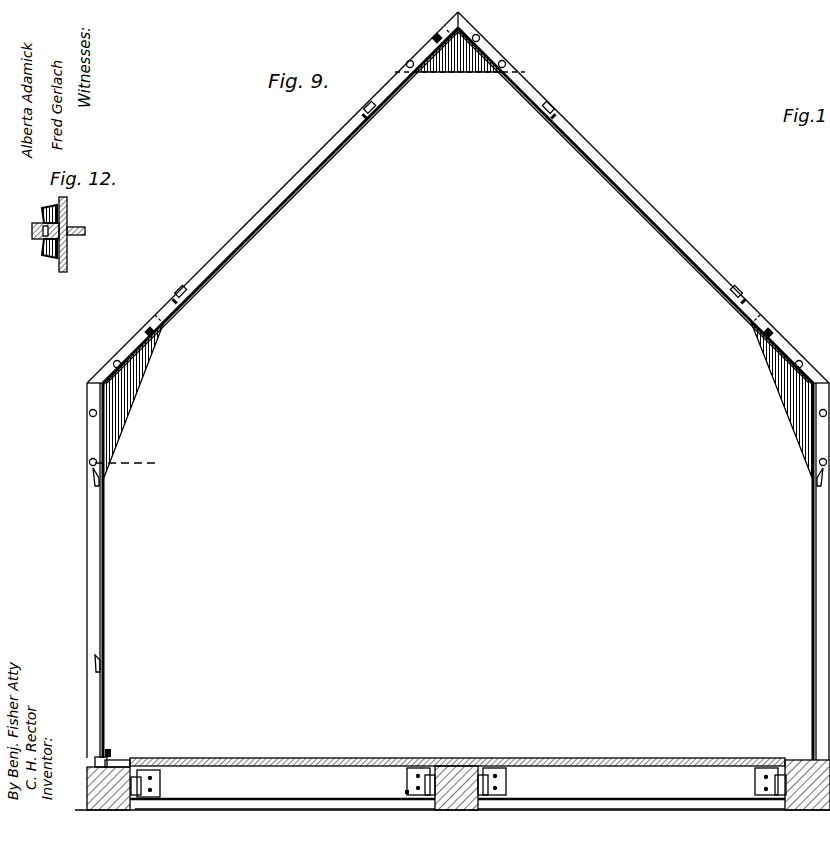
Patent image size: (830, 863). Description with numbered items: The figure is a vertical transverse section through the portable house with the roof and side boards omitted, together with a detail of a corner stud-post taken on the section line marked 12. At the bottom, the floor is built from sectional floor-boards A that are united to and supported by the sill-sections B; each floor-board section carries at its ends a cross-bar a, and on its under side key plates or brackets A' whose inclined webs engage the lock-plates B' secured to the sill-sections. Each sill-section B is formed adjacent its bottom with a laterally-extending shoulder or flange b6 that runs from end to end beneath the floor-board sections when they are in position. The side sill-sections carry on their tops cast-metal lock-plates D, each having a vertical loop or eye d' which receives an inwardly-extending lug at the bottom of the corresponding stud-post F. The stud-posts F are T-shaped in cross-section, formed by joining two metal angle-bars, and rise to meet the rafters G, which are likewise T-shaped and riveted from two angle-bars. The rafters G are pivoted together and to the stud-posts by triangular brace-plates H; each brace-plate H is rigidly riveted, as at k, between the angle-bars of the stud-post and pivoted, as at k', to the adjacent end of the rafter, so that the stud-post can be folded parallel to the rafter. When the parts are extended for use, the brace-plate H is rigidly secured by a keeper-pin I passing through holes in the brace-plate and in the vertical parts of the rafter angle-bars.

In FIG. 9, the rafter G is at (292, 195).
In FIG. 9, the stud-post F is at (458, 571).
In FIG. 12, the stud-post F is at (74, 234).
In FIG. 9, the brace-plate H is at (466, 70).
In FIG. 12, the brace-plate H is at (86, 230).
In FIG. 9, the keeper-pin I is at (434, 38).
In FIG. 9, the fastening clip bolt k is at (435, 356).
In FIG. 12, the fastening clip bolt k is at (37, 251).
In FIG. 9, the bolt k' is at (464, 208).
In FIG. 9, the sectional floor-board A is at (457, 751).
In FIG. 9, the cross-bar a is at (457, 790).
In FIG. 9, the shoulder or flange b6 is at (752, 801).
In FIG. 9, the sill-section B is at (448, 770).
In FIG. 9, the key plate or bracket A' is at (458, 762).
In FIG. 9, the lock-plate B' is at (388, 783).
In FIG. 9, the lock-plate D is at (113, 761).
In FIG. 9, the loop or eye d' is at (120, 742).
In FIG. 9, the section line of Fig. 12 is at (36, 463).